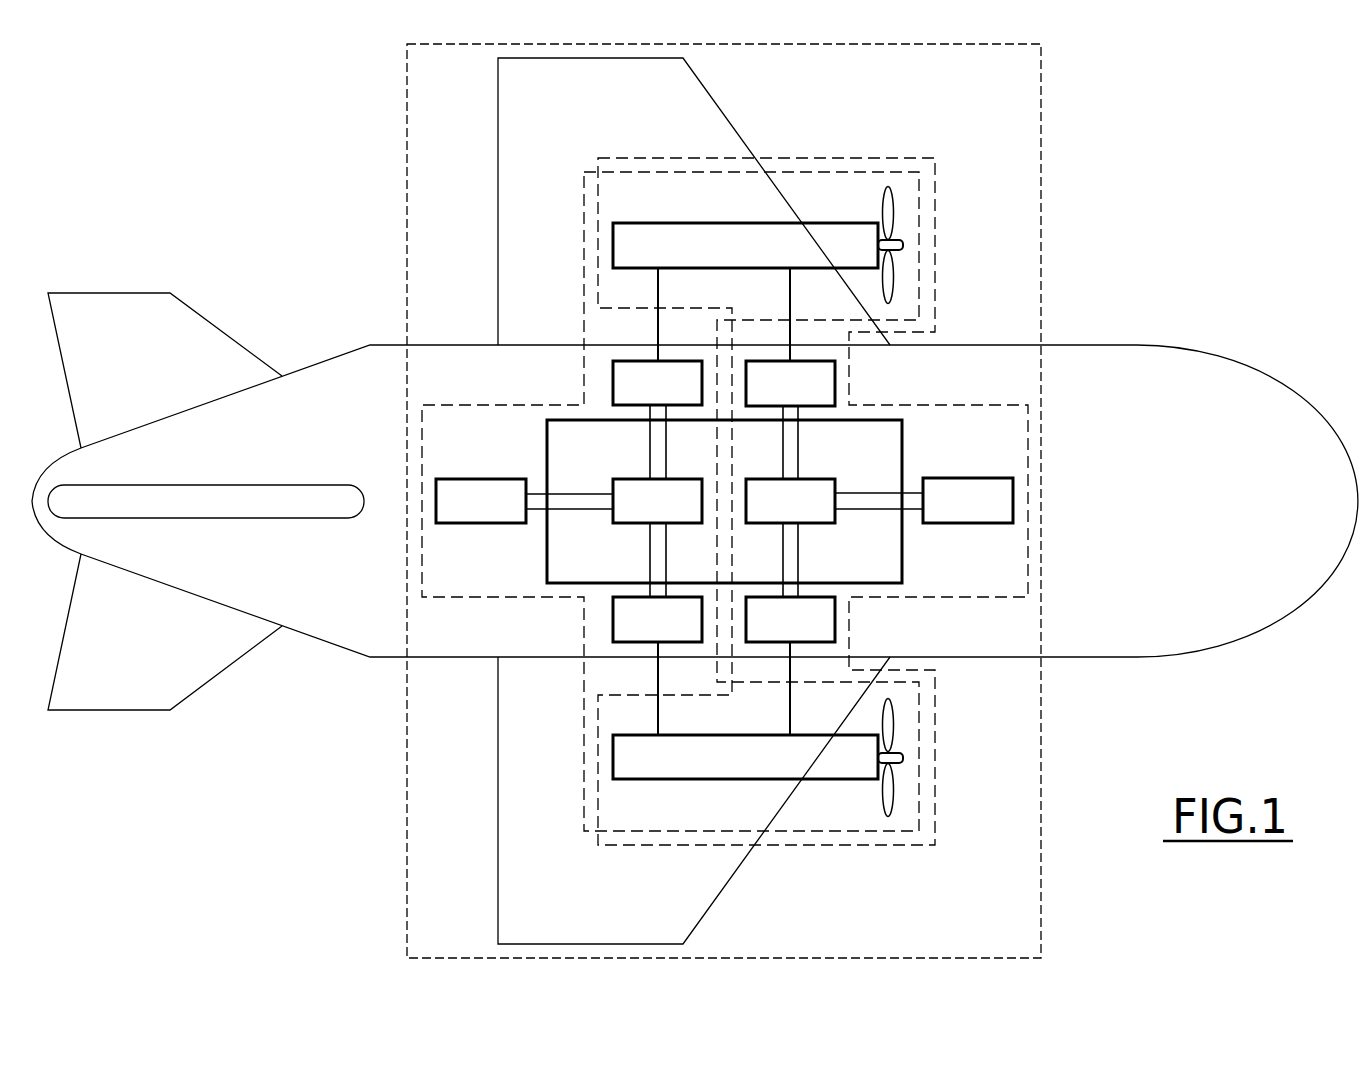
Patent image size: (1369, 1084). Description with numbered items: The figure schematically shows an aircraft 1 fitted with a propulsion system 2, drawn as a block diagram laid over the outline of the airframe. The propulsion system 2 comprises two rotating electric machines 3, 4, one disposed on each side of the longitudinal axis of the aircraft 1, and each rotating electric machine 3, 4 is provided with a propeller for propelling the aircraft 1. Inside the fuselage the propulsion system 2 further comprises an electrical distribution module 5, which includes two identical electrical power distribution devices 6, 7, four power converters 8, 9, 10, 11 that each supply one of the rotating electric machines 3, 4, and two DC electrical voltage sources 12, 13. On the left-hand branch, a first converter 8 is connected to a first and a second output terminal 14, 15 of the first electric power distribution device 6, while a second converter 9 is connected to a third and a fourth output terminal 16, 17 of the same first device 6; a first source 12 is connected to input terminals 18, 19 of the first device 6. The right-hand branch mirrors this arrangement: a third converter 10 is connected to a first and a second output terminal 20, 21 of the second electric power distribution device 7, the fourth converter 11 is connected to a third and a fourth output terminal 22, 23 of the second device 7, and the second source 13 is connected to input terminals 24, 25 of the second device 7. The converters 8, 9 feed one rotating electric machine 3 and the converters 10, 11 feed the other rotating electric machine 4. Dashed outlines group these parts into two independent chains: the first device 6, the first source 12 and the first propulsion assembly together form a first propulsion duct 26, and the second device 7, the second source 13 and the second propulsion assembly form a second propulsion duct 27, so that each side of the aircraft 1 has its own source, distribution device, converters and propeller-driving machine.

The aircraft 1 is at (695, 501).
The propulsion system 2 is at (699, 501).
The rotating electric machine 3 is at (758, 206).
The rotating electric machine 4 is at (758, 800).
The electrical distribution module 5 is at (746, 531).
The first electric power distribution device 6 is at (657, 501).
The second electric power distribution device 7 is at (790, 501).
The first converter 8 is at (657, 383).
The second converter 9 is at (657, 619).
The third converter 10 is at (790, 383).
The fourth converter 11 is at (790, 619).
The first source 12 is at (481, 501).
The second source 13 is at (968, 500).
The first output terminal 14 is at (684, 442).
The second output terminal 15 is at (630, 442).
The third output terminal 16 is at (684, 560).
The fourth output terminal 17 is at (630, 560).
The input terminal 18 is at (569, 480).
The input terminal 19 is at (569, 523).
The first output terminal 20 is at (817, 442).
The second output terminal 21 is at (764, 442).
The third output terminal 22 is at (817, 560).
The fourth output terminal 23 is at (764, 560).
The input terminal 24 is at (879, 482).
The input terminal 25 is at (879, 523).
The first propulsion duct 26 is at (670, 501).
The second propulsion duct 27 is at (813, 501).